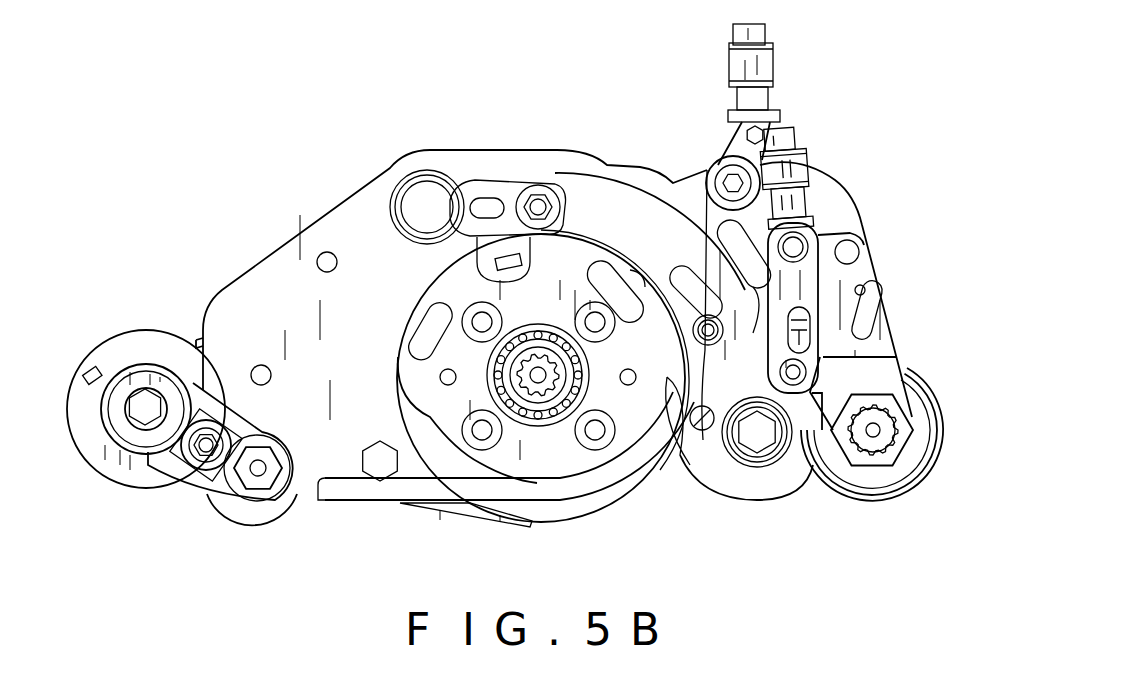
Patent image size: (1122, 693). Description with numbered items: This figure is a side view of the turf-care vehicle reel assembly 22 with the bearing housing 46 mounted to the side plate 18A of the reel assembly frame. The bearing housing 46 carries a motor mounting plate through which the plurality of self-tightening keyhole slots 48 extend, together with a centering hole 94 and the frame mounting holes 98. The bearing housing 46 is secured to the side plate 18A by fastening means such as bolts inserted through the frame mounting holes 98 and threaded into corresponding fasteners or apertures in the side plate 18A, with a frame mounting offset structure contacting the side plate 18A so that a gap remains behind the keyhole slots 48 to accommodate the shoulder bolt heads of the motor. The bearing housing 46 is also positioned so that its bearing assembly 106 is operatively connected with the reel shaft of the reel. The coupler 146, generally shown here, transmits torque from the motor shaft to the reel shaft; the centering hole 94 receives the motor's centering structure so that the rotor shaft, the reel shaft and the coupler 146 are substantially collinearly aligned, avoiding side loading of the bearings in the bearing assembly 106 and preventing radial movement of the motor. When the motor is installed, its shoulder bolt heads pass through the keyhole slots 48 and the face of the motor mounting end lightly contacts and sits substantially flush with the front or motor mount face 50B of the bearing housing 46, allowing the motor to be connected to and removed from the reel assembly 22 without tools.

The reel assembly 22 is at (503, 118).
The side plate 18A is at (258, 300).
The bearing housing 46 is at (442, 462).
The self-tightening keyhole slots 48 is at (417, 341).
The front or motor mount face 50B is at (632, 402).
The centering hole 94 is at (545, 395).
The frame mounting holes 98 is at (383, 172).
The bearing assembly 106 is at (557, 420).
The coupler 146 is at (488, 178).